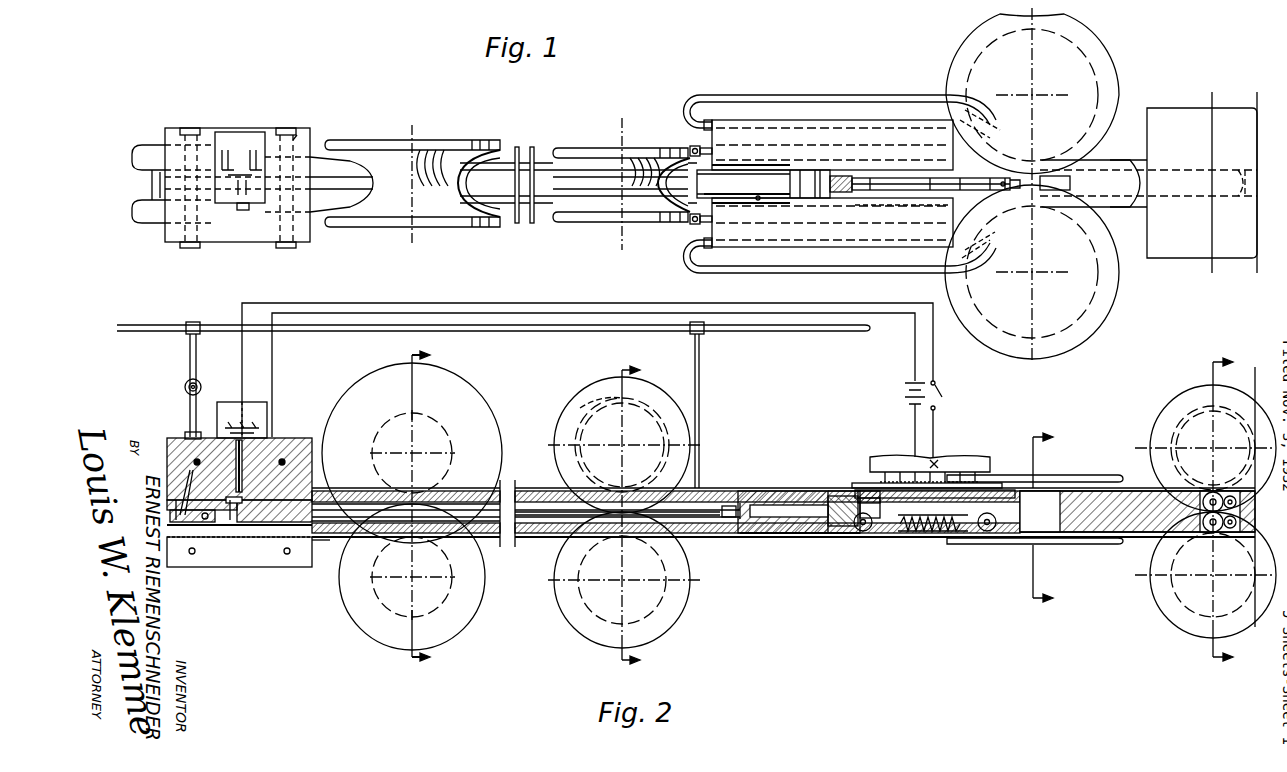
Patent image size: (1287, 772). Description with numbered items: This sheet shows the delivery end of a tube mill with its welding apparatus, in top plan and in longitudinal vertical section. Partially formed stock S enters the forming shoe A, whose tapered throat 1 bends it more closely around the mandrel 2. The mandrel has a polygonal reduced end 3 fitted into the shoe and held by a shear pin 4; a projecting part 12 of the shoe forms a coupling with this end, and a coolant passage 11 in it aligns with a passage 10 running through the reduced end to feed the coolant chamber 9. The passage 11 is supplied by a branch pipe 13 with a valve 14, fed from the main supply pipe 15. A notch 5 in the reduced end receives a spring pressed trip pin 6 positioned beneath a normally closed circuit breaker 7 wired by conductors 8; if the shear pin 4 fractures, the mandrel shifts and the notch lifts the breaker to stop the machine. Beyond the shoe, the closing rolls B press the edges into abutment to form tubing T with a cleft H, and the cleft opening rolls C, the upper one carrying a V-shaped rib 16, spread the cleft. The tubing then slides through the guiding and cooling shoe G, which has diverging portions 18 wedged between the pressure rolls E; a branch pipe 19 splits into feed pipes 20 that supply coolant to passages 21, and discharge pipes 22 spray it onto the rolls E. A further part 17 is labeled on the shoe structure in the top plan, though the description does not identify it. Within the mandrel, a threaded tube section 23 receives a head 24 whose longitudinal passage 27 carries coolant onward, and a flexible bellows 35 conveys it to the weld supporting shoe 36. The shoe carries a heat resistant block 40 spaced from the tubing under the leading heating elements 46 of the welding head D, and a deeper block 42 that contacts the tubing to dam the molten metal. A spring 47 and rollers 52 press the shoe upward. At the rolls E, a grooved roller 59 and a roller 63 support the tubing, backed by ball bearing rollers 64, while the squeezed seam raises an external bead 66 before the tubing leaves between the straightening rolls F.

In FIG. 1, the forming shoe A is at (205, 130).
In FIG. 2, the forming shoe A is at (290, 455).
In FIG. 1, the tapered passage or throat 1 is at (297, 135).
In FIG. 1, the circuit breaker 7 is at (253, 170).
In FIG. 2, the circuit breaker 7 is at (258, 428).
In FIG. 1, the stock S is at (340, 198).
In FIG. 1, the final forming rolls B is at (440, 148).
In FIG. 2, the final forming rolls B is at (470, 415).
In FIG. 1, the tubing T is at (528, 203).
In FIG. 1, the cleft opening rolls C is at (636, 150).
In FIG. 2, the cleft opening rolls C is at (655, 402).
In FIG. 1, the peripheral V-shaped rib 16 is at (600, 178).
In FIG. 2, the peripheral V-shaped rib 16 is at (580, 414).
In FIG. 1, the feed pipes 20 is at (690, 150).
In FIG. 1, the guiding and cooling shoe G is at (812, 128).
In FIG. 1, the discharge pipe 22 is at (880, 95).
In FIG. 1, the seam cleft H is at (750, 180).
In FIG. 2, the seam cleft H is at (472, 493).
In FIG. 1, the piston 17 is at (762, 200).
In FIG. 1, the weld supporting shoe 36 is at (862, 215).
In FIG. 2, the weld supporting shoe 36 is at (868, 492).
In FIG. 1, the longitudinally extending passages 21 is at (900, 215).
In FIG. 1, the heat resistant block 40 is at (900, 178).
In FIG. 2, the heat resistant block 40 is at (900, 483).
In FIG. 1, the rearwardly diverging portions 18 is at (980, 140).
In FIG. 1, the pressure rolls E is at (1032, 185).
In FIG. 2, the pressure rolls E is at (1070, 477).
In FIG. 1, the guide or straightening rolls F is at (1178, 130).
In FIG. 2, the guide or straightening rolls F is at (1178, 418).
In FIG. 2, the main supply pipe 15 is at (150, 325).
In FIG. 2, the conductors 8 is at (242, 356).
In FIG. 2, the branch pipe 13 is at (190, 410).
In FIG. 2, the valve 14 is at (185, 387).
In FIG. 2, the reduced end 3 is at (282, 520).
In FIG. 2, the notch 5 is at (228, 514).
In FIG. 2, the shear pin 4 is at (250, 512).
In FIG. 2, the passage 10 is at (300, 540).
In FIG. 2, the coolant passage 11 is at (182, 520).
In FIG. 2, the projecting part 12 is at (205, 522).
In FIG. 2, the mandrel 2 is at (525, 492).
In FIG. 2, the coolant chamber 9 is at (545, 522).
In FIG. 2, the spring pressed trip pin 6 is at (427, 507).
In FIG. 2, the branch pipe 19 is at (700, 377).
In FIG. 2, the mandrel section 23 is at (755, 491).
In FIG. 2, the head 24 is at (812, 491).
In FIG. 2, the longitudinal passage 27 is at (780, 535).
In FIG. 2, the flexible metal bellows 35 is at (868, 520).
In FIG. 2, the welding head D is at (888, 462).
In FIG. 2, the heating elements 46 is at (940, 470).
In FIG. 2, the second malarc block 42 is at (985, 490).
In FIG. 2, the spring 47 is at (925, 534).
In FIG. 2, the rollers 52 is at (860, 532).
In FIG. 2, the roller 59 is at (1040, 495).
In FIG. 2, the roller 63 is at (1028, 532).
In FIG. 2, the ball bearing rollers 64 is at (1055, 528).
In FIG. 2, the external bead 66 is at (1100, 476).